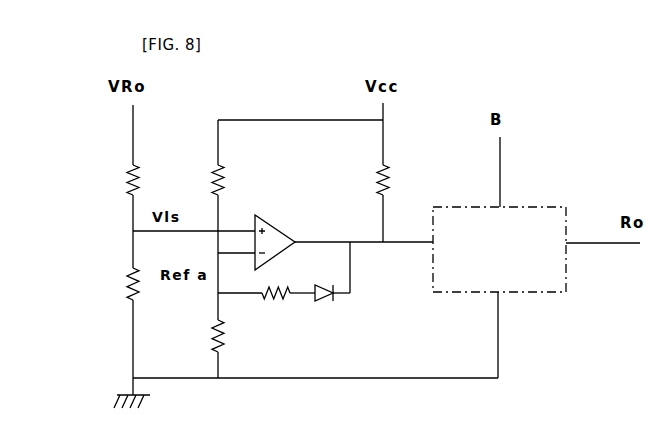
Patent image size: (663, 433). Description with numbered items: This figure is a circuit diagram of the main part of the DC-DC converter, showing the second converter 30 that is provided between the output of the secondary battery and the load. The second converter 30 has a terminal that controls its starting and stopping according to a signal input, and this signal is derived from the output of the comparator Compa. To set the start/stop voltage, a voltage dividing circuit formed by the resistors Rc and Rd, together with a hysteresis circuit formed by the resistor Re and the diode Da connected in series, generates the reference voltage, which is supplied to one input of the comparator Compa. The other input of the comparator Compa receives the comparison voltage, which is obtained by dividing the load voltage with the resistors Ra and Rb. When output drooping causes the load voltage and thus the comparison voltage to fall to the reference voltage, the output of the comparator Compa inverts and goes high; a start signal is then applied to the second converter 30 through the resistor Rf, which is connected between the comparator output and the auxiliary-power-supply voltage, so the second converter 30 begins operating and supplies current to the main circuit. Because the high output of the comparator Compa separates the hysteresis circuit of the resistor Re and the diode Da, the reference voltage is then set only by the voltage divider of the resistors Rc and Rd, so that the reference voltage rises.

The second converter 30 is at (455, 278).
The resistor Ra is at (152, 171).
The resistor Rb is at (113, 277).
The resistor Rc is at (235, 171).
The resistor Rd is at (195, 336).
The resistor Re is at (278, 312).
The resistor Rf is at (401, 172).
The diode Da is at (337, 311).
The comparator Comp a Compa is at (299, 232).